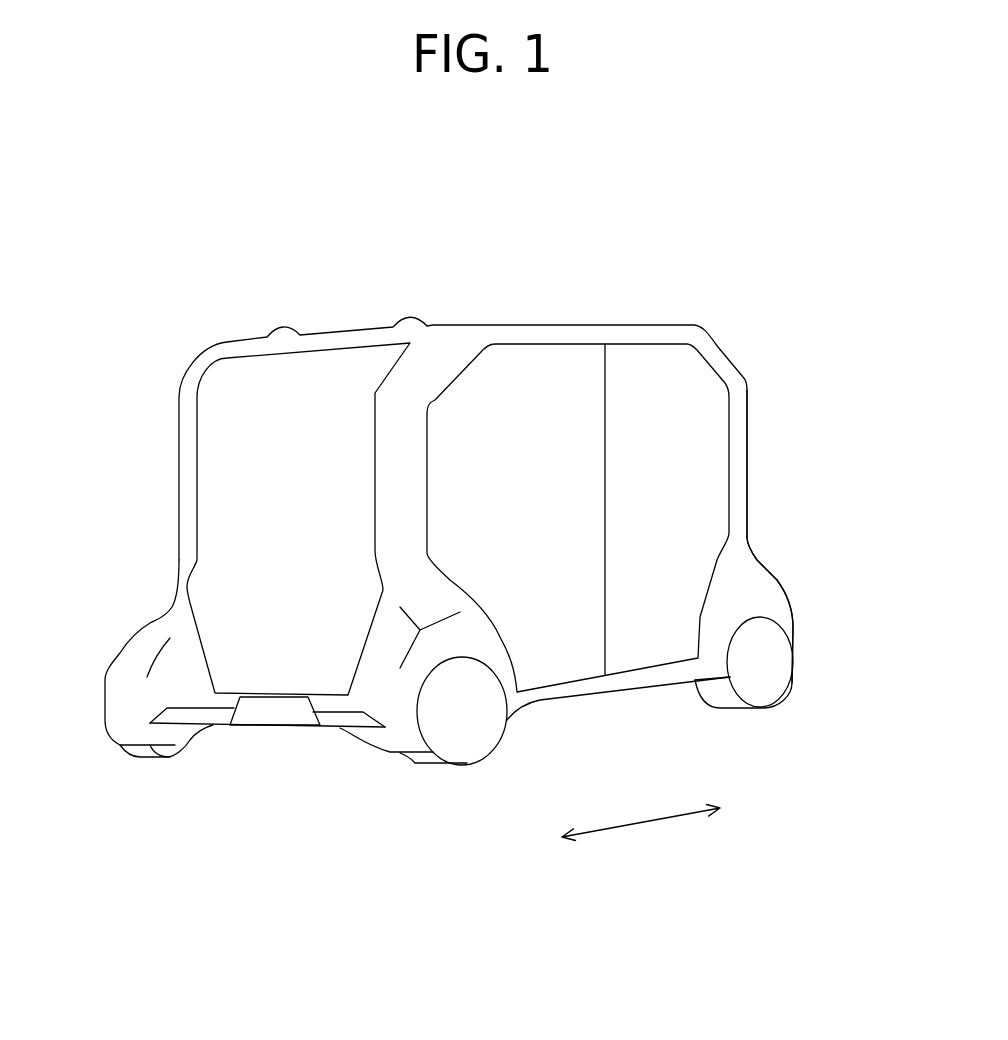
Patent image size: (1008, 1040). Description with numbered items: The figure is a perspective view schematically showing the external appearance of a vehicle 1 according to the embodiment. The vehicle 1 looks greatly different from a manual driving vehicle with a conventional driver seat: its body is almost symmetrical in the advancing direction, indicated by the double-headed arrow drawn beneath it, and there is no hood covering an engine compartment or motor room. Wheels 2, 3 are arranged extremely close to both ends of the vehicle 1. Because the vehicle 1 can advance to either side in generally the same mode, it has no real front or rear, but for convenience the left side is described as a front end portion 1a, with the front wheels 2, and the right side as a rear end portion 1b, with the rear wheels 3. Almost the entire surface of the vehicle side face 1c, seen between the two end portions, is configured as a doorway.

The vehicle 1 is at (746, 327).
The front end portion 1a is at (223, 482).
The rear end portion 1b is at (747, 460).
The vehicle side face 1c is at (541, 387).
The front wheels 2 is at (152, 755).
The rear wheels 3 is at (777, 690).